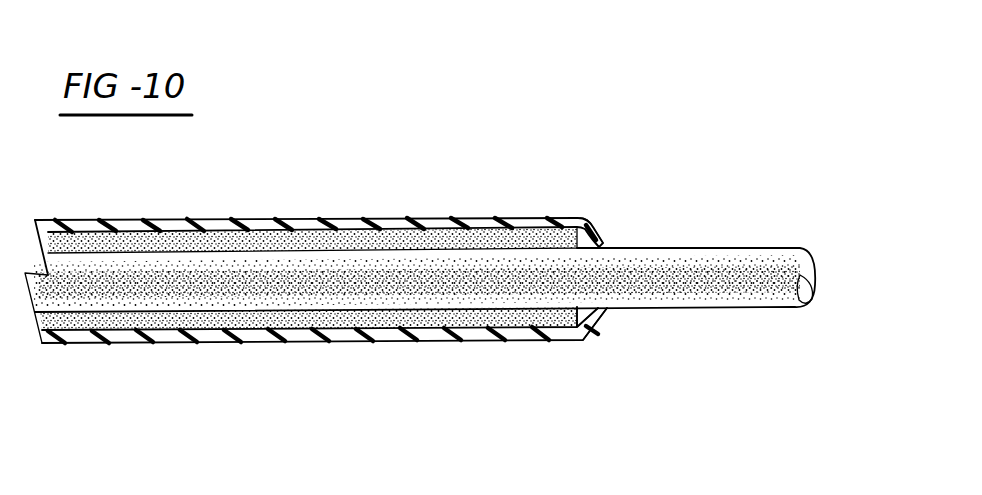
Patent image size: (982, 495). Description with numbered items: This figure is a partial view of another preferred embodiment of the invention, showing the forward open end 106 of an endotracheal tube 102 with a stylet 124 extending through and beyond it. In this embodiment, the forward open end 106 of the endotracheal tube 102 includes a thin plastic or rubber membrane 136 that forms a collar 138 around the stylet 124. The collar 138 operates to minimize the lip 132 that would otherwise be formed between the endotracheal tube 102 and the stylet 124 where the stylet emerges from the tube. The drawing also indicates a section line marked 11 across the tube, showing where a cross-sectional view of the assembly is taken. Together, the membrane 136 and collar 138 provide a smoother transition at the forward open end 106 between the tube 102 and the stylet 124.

The endotracheal tube 102 is at (327, 218).
The forward open end 106 is at (612, 213).
The stylet 124 is at (208, 285).
The lip 132 is at (627, 318).
The membrane 136 is at (587, 333).
The collar 138 is at (625, 243).
The section line 11- 11 is at (475, 152).